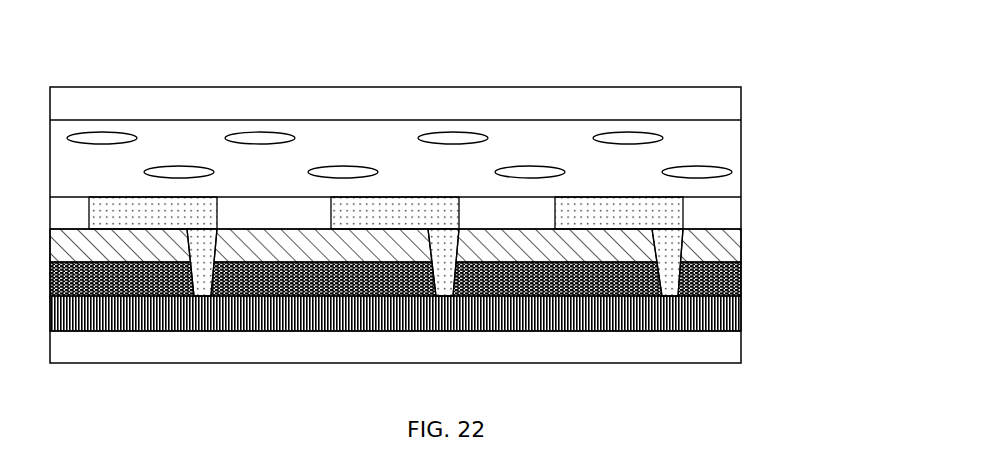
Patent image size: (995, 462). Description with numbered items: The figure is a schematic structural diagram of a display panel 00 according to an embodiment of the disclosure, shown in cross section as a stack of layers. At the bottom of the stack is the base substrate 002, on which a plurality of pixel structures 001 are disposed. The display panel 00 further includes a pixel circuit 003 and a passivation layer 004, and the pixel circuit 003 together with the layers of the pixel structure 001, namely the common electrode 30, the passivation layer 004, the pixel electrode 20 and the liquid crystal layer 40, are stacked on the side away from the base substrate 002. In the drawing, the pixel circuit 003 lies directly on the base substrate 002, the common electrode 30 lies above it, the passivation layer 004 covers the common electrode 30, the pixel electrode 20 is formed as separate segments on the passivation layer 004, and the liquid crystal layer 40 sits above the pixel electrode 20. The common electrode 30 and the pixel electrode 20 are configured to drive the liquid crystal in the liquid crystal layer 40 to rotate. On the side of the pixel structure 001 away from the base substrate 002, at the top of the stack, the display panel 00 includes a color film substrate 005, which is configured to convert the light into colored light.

The display panel 00 is at (68, 80).
The color film substrate 005 is at (750, 103).
The liquid crystal layer 40 is at (750, 153).
The pixel electrode 20 is at (692, 214).
The pixel structure 001 is at (453, 258).
The passivation layer 004 is at (713, 258).
The common electrode 30 is at (425, 279).
The pixel circuit 003 is at (750, 317).
The base substrate 002 is at (750, 351).